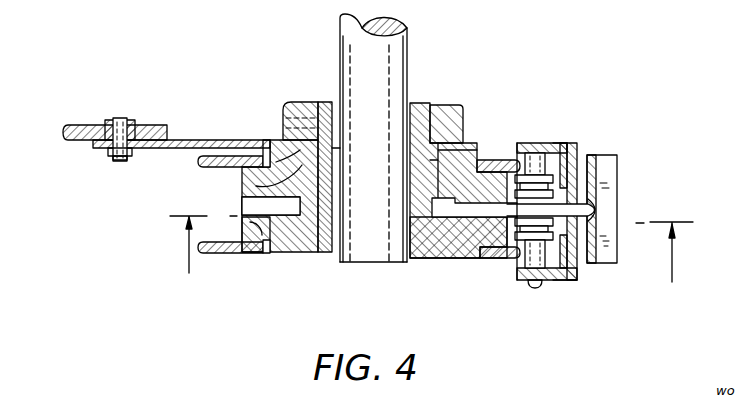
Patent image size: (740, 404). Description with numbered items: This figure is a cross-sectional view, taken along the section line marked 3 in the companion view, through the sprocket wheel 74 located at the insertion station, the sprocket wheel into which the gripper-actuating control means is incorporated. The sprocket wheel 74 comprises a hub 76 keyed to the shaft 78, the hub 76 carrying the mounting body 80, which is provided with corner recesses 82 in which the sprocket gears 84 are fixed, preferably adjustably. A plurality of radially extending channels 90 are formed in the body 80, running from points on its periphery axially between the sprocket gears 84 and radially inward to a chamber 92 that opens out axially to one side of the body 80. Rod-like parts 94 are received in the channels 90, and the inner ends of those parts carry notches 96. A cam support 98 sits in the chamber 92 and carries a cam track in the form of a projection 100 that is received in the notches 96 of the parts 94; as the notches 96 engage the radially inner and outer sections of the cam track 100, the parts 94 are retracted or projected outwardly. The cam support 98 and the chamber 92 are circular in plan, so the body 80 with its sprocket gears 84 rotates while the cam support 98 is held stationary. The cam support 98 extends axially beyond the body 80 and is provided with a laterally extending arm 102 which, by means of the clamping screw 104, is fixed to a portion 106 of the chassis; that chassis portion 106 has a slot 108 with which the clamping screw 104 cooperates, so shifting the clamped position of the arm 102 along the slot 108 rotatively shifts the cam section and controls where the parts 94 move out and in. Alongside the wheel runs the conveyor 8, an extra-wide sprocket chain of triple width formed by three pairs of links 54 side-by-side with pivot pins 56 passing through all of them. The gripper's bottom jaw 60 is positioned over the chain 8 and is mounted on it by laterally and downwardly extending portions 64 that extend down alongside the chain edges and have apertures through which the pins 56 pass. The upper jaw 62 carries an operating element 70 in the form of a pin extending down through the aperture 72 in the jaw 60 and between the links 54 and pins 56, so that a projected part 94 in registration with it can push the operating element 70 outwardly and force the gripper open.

The section line 3- 3 is at (431, 261).
The conveyor 8 is at (590, 128).
The links 54 is at (523, 143).
The pivot pins 56 is at (536, 150).
The bottom jaw 60 is at (578, 152).
The jaw 62 is at (598, 187).
The laterally and downwardly extending portions 64 is at (557, 145).
The operating element 70 is at (568, 200).
The aperture 72 is at (600, 212).
The sprocket wheel 74 is at (247, 104).
The hub 76 is at (432, 106).
The shaft 78 is at (396, 68).
The mounting body 80 is at (322, 252).
The corner recesses 82 is at (266, 140).
The sprocket gears 84 is at (225, 156).
The channels 90 is at (252, 217).
The chamber 92 is at (300, 150).
The rod-like parts 94 is at (242, 206).
The notches 96 is at (256, 186).
The cam support 98 is at (283, 142).
The cam track 100 is at (262, 235).
The arm 102 is at (183, 140).
The clamping screw 104 is at (133, 171).
The chassis portion 106 is at (80, 126).
The slot 108 is at (108, 158).